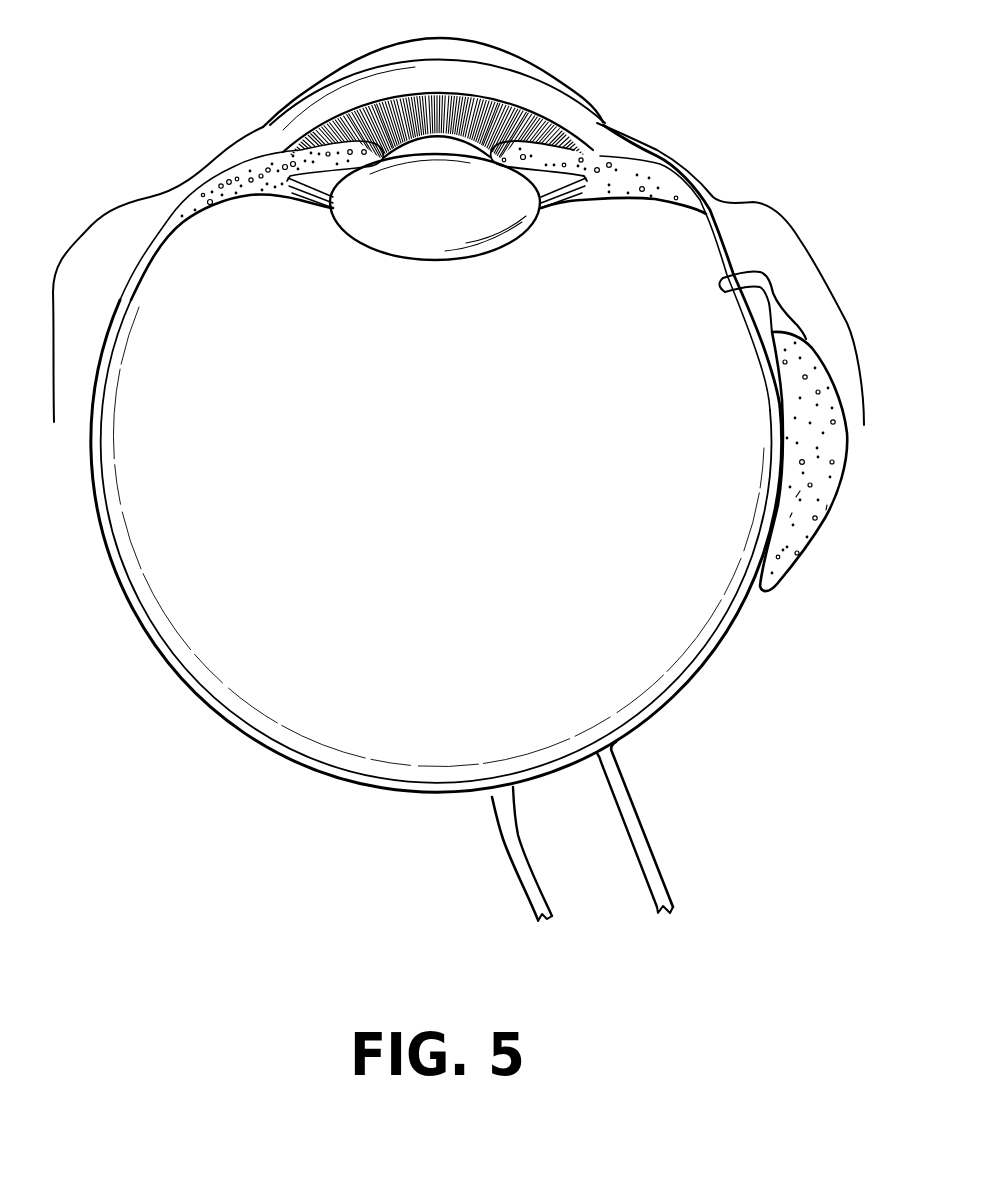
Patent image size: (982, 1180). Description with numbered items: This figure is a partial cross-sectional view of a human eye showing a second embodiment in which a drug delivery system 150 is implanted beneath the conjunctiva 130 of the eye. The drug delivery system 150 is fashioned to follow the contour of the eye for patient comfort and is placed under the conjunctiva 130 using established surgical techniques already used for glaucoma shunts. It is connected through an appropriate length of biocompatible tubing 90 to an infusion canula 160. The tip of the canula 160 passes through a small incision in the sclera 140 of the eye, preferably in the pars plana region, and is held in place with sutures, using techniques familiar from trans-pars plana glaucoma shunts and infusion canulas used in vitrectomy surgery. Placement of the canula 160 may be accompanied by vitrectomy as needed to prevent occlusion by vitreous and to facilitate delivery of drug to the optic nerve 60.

The optic nerve 60 is at (587, 837).
The biocompatible tubing 90 is at (793, 320).
The conjunctiva of the eye 130 is at (713, 197).
The sclera of the eye 140 is at (707, 655).
The drug delivery system 150 is at (802, 428).
The infusion canula 160 is at (717, 283).